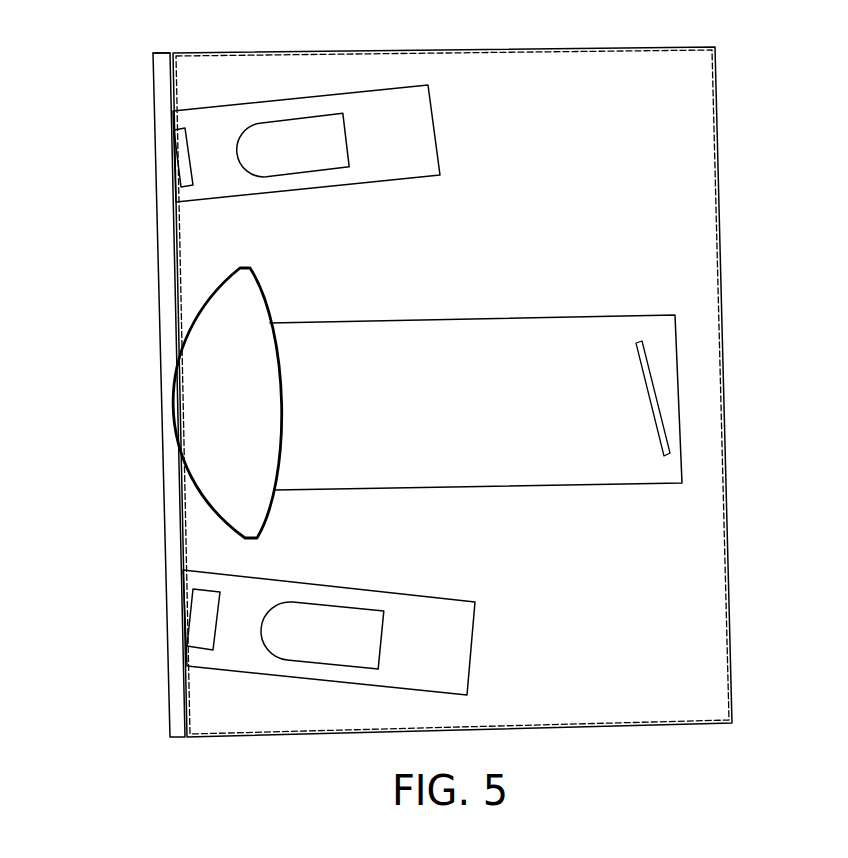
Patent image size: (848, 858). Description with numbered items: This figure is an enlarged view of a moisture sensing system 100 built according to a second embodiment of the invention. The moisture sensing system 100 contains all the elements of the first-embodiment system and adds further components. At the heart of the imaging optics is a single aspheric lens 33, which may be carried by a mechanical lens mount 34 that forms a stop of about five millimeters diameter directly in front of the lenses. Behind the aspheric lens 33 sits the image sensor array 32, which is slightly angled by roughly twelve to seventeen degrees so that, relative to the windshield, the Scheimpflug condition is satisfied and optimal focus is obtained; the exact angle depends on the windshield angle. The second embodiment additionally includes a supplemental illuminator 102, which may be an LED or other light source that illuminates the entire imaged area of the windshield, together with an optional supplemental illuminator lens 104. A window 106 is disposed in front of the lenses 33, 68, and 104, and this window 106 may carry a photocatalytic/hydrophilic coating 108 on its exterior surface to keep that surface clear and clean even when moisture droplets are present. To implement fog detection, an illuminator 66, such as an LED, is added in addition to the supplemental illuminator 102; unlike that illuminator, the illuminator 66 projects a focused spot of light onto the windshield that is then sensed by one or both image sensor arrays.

The moisture sensing system 100 is at (104, 454).
The mechanical lens mount 34 is at (676, 183).
The photocatalytic/hydrophilic coating 108 is at (157, 222).
The window 106 is at (158, 94).
The lens 68 is at (180, 161).
The illuminator 66 is at (293, 175).
The supplemental illuminator lens 104 is at (193, 627).
The supplemental illuminator 102 is at (318, 670).
The image sensor array 32 is at (655, 432).
The aspheric lens 33 is at (207, 502).